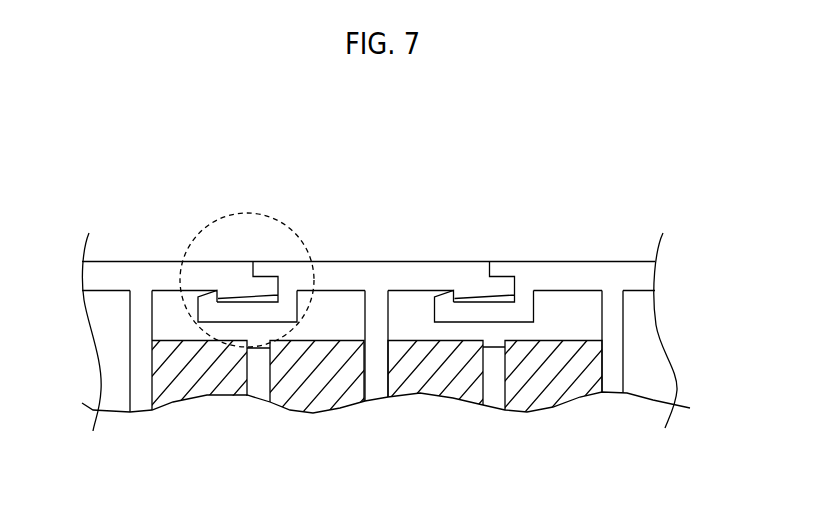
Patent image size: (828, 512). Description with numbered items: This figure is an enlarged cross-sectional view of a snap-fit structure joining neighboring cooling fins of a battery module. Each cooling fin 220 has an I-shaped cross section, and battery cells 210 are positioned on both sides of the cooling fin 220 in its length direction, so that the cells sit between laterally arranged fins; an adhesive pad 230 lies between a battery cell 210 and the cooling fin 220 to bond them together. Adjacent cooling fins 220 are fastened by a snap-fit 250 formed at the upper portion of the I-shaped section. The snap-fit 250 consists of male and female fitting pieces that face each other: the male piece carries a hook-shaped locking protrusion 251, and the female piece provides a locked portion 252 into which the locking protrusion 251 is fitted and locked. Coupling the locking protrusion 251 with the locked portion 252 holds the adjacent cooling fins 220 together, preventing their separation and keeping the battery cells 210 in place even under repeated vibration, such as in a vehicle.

The battery cell 210 is at (202, 380).
The cooling fin 220 is at (377, 280).
The adhesive pad 230 is at (257, 382).
The snap-fit 250 is at (187, 243).
The hook-shaped locking protrusion 251 is at (288, 275).
The locked portion 252 is at (236, 273).